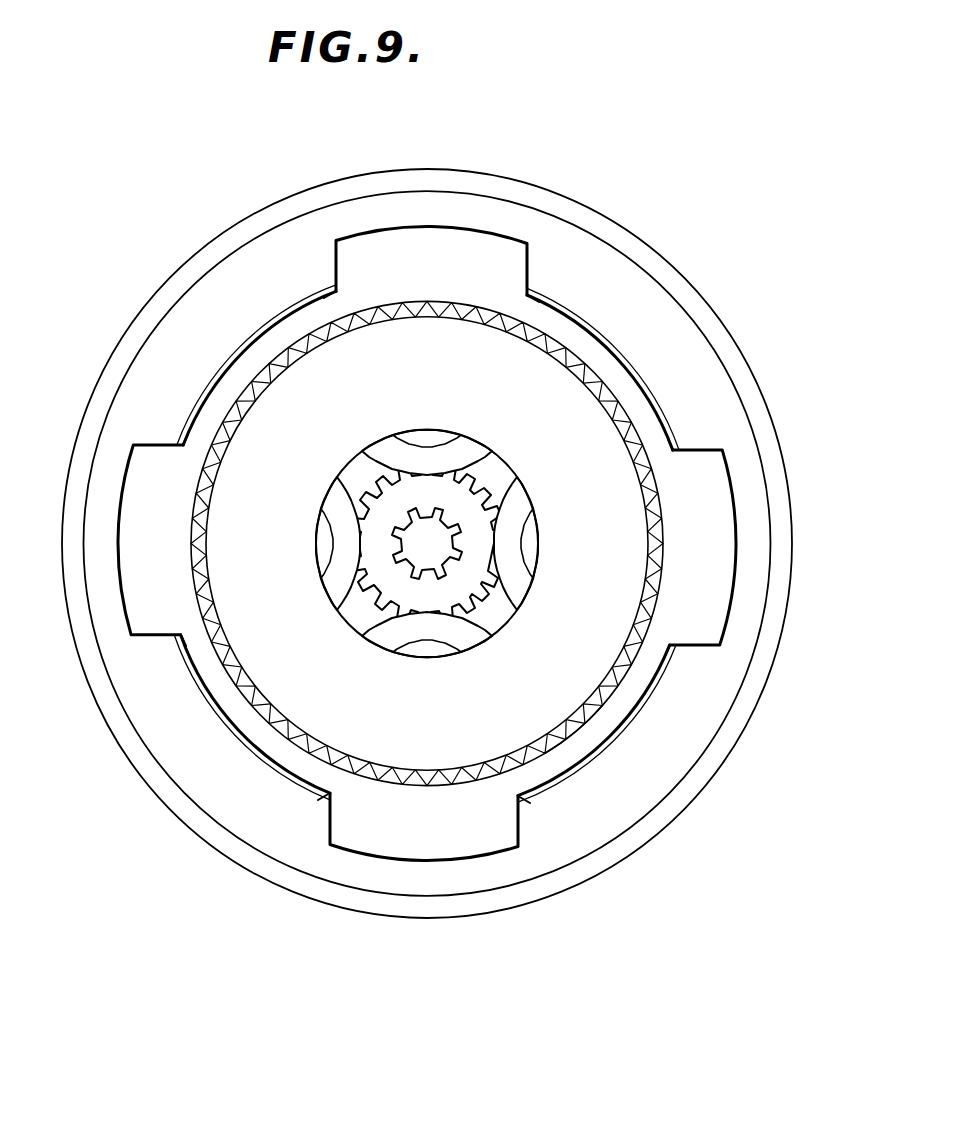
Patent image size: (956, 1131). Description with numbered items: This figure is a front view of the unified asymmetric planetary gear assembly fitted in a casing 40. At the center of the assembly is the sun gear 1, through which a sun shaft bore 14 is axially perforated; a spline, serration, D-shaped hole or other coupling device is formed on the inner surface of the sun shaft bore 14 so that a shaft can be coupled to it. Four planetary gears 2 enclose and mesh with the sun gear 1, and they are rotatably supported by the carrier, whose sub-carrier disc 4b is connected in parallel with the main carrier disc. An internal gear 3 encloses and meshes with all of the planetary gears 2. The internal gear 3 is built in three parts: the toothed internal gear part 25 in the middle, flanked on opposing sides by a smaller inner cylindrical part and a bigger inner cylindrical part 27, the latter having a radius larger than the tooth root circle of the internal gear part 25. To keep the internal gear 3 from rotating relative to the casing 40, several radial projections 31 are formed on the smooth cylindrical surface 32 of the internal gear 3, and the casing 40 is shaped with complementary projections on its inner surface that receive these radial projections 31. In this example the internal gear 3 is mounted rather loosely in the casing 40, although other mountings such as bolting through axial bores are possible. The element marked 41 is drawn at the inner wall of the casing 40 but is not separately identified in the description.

The sun gear 1 is at (380, 562).
The planetary gears 2 is at (397, 453).
The internal gear 3 is at (288, 333).
The sub-carrier disc 4b is at (557, 693).
The sun shaft bore 14 is at (410, 568).
The internal gear part 25 is at (273, 723).
The bigger inner cylindrical part 27 is at (327, 792).
The radial projections 31 is at (493, 257).
The smooth cylindrical surface 32 is at (657, 413).
The casing 40 is at (383, 172).
The housing inner wall 41 is at (503, 213).